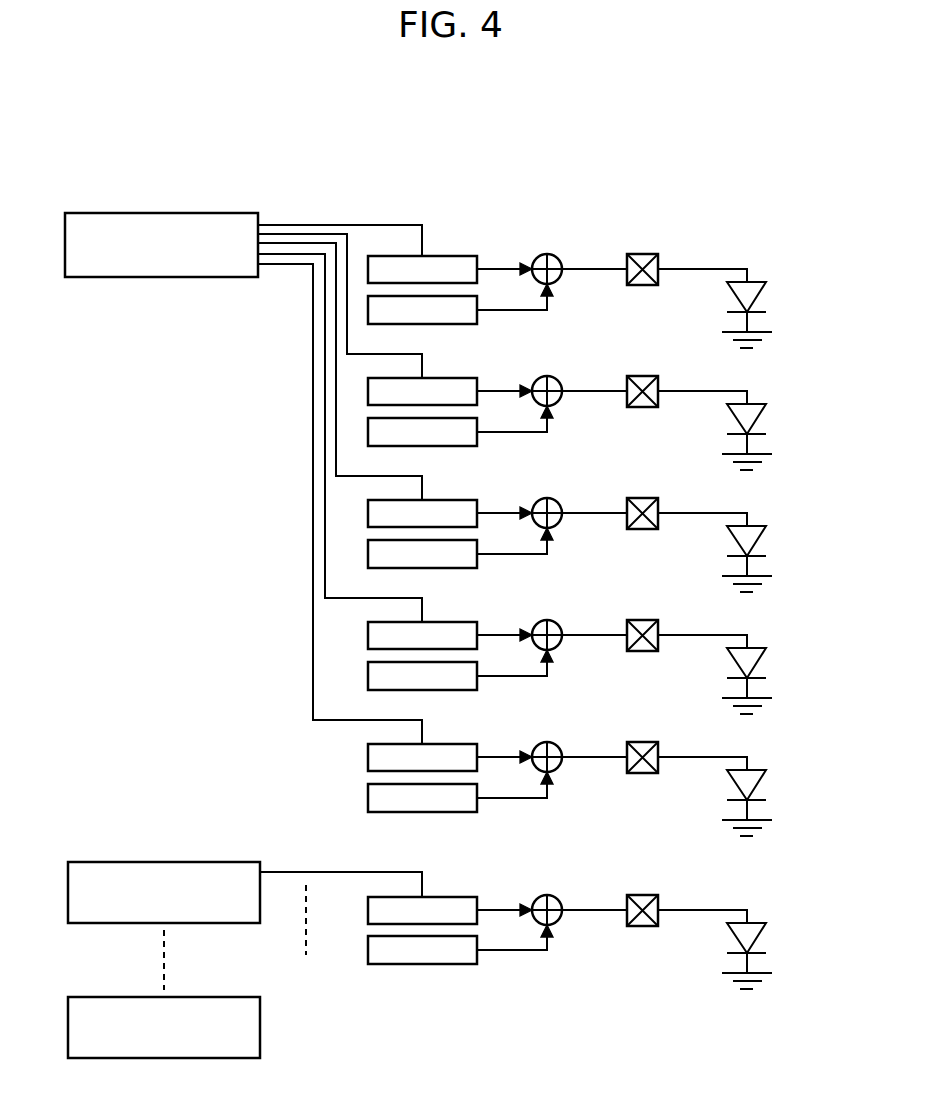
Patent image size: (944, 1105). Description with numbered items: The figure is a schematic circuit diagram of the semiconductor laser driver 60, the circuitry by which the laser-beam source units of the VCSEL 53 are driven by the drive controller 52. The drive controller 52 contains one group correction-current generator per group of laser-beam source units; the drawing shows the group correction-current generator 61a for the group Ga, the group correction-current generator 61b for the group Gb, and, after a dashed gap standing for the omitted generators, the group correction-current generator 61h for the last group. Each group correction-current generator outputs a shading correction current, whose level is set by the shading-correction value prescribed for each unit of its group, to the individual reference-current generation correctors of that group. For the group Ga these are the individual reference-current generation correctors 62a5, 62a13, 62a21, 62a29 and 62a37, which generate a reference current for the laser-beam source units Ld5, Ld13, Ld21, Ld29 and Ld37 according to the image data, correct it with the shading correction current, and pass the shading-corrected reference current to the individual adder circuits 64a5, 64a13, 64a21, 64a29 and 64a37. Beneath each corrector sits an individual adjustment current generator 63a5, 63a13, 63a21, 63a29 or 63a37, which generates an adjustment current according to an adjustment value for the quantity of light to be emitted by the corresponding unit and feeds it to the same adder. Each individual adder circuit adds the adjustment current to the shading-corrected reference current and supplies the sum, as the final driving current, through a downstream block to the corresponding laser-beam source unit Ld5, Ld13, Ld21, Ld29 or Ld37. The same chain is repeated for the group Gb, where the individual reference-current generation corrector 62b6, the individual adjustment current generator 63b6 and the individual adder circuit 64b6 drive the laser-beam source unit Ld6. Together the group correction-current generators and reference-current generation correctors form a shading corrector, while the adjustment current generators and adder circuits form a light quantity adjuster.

The semiconductor laser driver 60 is at (558, 112).
The drive controller 52 is at (384, 192).
The VCSEL 53 is at (755, 181).
The group correction-current generator 61a is at (222, 213).
The group correction-current generator 61b is at (222, 862).
The group correction-current generator 61h is at (222, 997).
The individual reference-current generation corrector 62a5 is at (437, 256).
The individual adjustment current generator 63a5 is at (440, 324).
The individual adder circuit 64a5 is at (572, 241).
The individual reference-current generation corrector 62a13 is at (437, 378).
The individual adjustment current generator 63a13 is at (440, 446).
The individual adder circuit 64a13 is at (572, 363).
The individual reference-current generation corrector 62a21 is at (437, 500).
The individual adjustment current generator 63a21 is at (440, 568).
The individual adder circuit 64a21 is at (572, 485).
The individual reference-current generation corrector 62a29 is at (437, 622).
The individual adjustment current generator 63a29 is at (440, 690).
The individual adder circuit 64a29 is at (572, 607).
The individual reference-current generation corrector 62a37 is at (437, 744).
The individual adjustment current generator 63a37 is at (440, 812).
The individual adder circuit 64a37 is at (572, 729).
The individual reference-current generation corrector 62b6 is at (437, 897).
The individual adjustment current generator 63b6 is at (440, 964).
The individual adder circuit 64b6 is at (572, 882).
The group Ga is at (755, 251).
The group Gb is at (755, 900).
The laser-beam source unit Ld5 is at (752, 279).
The laser-beam source unit Ld13 is at (752, 401).
The laser-beam source unit Ld21 is at (752, 523).
The laser-beam source unit Ld29 is at (752, 645).
The laser-beam source unit Ld37 is at (752, 767).
The laser-beam source unit Ld6 is at (752, 920).